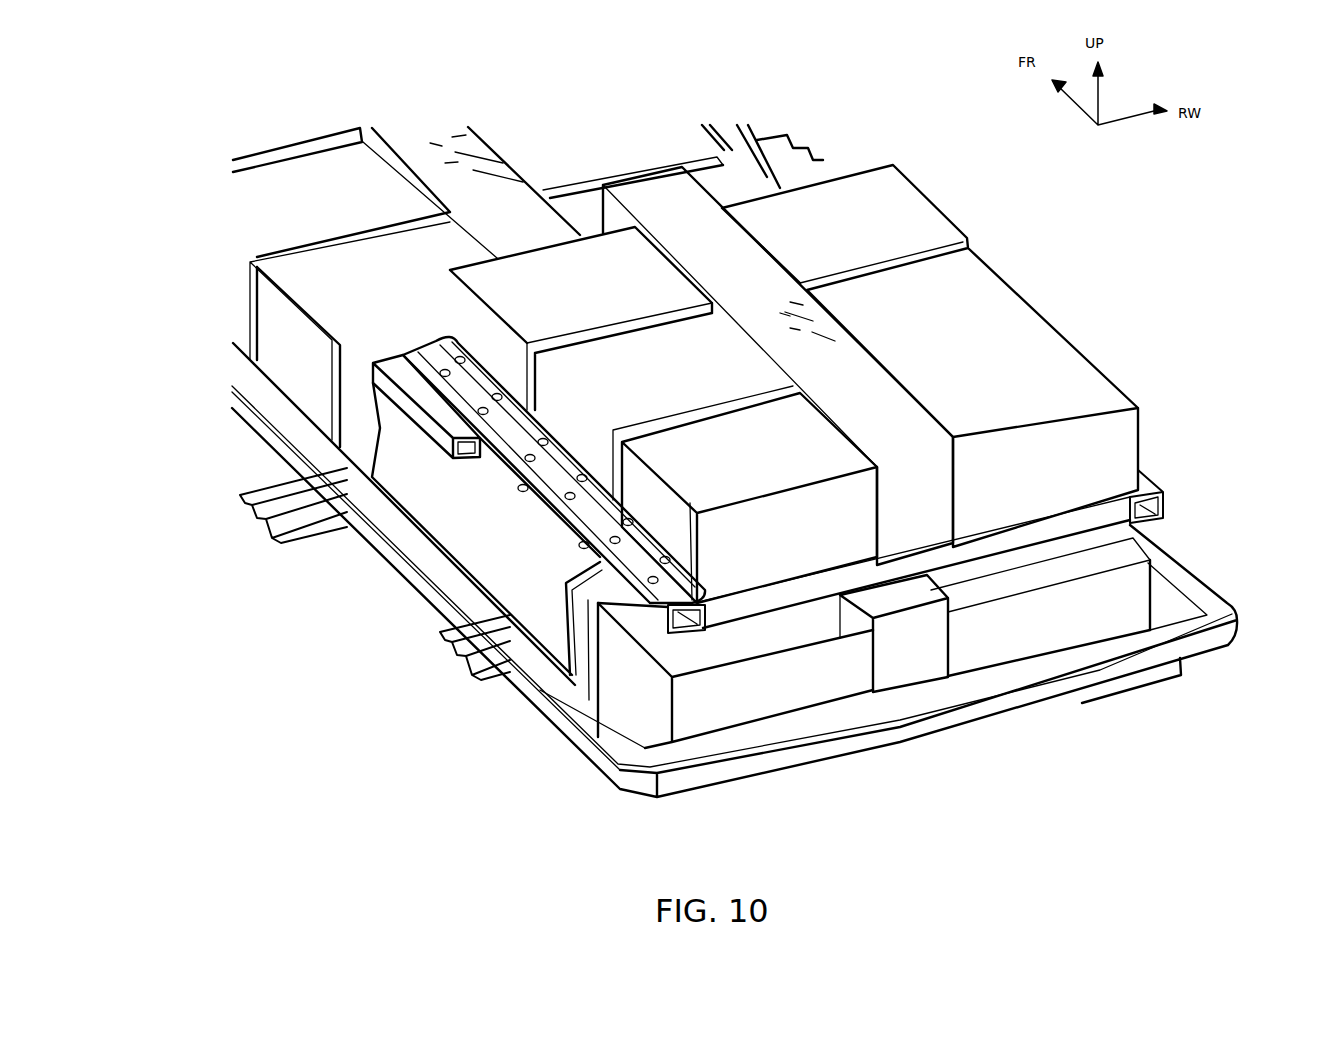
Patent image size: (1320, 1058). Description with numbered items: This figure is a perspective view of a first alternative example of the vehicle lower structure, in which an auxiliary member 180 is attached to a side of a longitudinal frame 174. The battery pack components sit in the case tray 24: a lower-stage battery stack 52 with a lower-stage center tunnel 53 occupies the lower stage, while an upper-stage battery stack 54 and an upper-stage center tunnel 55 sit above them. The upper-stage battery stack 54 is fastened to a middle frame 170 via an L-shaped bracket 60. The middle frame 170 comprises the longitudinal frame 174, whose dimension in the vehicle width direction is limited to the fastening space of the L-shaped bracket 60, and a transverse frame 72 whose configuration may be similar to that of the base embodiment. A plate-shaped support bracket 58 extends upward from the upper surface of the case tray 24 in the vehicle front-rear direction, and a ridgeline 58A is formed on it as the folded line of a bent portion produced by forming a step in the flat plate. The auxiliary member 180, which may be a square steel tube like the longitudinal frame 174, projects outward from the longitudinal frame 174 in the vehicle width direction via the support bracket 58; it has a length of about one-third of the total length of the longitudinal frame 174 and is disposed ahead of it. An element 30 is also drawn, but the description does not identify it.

The case tray 24 is at (620, 787).
The cross rail 30 is at (257, 531).
The lower-stage battery stack 52 is at (1078, 613).
The lower-stage center tunnel 53 is at (905, 653).
The upper-stage battery stack 54 is at (933, 200).
The upper-stage center tunnel 55 is at (648, 193).
The support bracket 58 is at (420, 495).
The ridgeline 58A is at (487, 513).
The L-shaped bracket 60 is at (433, 348).
The transverse frame 72 is at (997, 548).
The middle frame 170 is at (1097, 547).
The longitudinal frame 174 is at (648, 603).
The auxiliary member 180 is at (368, 357).